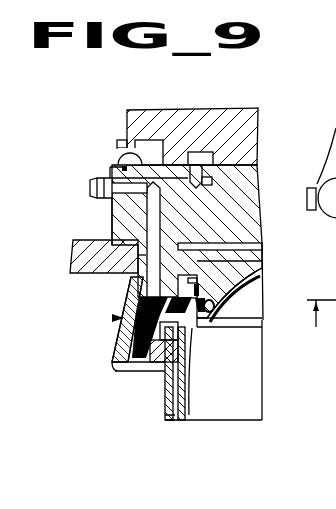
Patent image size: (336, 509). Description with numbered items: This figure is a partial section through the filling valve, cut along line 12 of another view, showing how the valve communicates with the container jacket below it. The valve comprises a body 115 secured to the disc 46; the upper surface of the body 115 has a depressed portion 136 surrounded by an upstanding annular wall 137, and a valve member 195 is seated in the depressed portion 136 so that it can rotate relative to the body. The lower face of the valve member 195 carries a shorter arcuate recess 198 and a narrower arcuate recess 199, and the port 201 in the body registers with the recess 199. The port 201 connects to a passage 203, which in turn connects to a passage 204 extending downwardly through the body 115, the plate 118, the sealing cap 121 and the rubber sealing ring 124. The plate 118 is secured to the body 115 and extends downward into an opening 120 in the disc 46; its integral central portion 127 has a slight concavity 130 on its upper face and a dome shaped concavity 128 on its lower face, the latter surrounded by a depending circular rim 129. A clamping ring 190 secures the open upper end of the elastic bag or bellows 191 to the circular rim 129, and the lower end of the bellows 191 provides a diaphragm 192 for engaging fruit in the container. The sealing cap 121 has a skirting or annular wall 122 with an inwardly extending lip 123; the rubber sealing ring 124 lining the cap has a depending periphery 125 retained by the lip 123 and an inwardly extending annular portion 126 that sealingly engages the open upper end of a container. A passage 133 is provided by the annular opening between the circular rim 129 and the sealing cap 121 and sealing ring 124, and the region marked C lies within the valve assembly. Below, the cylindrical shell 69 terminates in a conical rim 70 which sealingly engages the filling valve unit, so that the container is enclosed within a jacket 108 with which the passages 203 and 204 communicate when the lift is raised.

The valve member 195 is at (207, 128).
The shorter arcuate recess 198 is at (150, 140).
The port 201 is at (250, 170).
The narrower arcuate recess 199 is at (213, 150).
The upstanding annular wall 137 is at (118, 148).
The depressed portion 136 is at (117, 149).
The plate 118 is at (240, 237).
The passage 204 is at (116, 208).
The passage 203 is at (120, 168).
The body 115 is at (125, 229).
The disc 46 is at (72, 247).
The opening 120 is at (137, 256).
The slight concavity 130 is at (260, 245).
The central portion 127 is at (263, 255).
The dome shaped concavity 128 is at (267, 270).
The diaphragm 192 is at (264, 284).
The clamping ring 190 is at (178, 288).
The circular rim 129 is at (217, 308).
The inwardly extending annular portion 126 is at (197, 322).
The passage 133 is at (200, 337).
The elastic bag or bellows 191 is at (203, 322).
The rubber sealing ring 124 is at (117, 332).
The sealing cap 121 is at (112, 318).
The depending periphery 125 is at (126, 345).
The annular wall 122 is at (120, 362).
The lip 123 is at (125, 372).
The conical rim 70 is at (155, 372).
The cavity C is at (183, 393).
The jacket 108 is at (173, 430).
The cylindrical shell 69 is at (166, 422).
The section line 12 is at (319, 355).